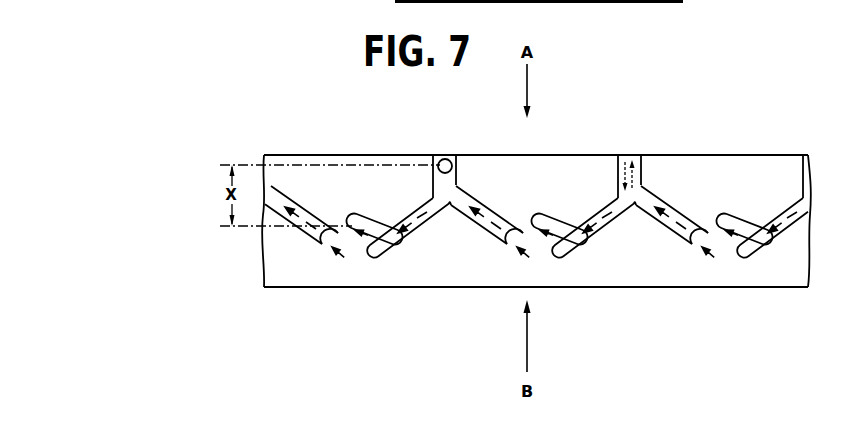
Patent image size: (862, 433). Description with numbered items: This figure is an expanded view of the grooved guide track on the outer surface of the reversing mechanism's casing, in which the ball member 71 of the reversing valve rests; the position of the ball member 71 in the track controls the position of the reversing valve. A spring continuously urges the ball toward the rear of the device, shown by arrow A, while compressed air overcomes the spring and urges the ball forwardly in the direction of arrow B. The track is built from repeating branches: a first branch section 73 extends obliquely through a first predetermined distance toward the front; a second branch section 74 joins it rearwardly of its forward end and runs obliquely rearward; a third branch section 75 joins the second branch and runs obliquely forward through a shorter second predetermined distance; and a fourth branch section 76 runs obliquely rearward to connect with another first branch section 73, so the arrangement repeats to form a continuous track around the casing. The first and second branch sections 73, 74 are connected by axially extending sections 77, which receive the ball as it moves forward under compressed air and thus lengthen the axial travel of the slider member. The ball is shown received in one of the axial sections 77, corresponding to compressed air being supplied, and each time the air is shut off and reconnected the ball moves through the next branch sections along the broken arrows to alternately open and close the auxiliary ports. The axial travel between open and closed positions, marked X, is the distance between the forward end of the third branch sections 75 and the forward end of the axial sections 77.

The ball member 71 is at (445, 159).
The first branch section 73 is at (304, 205).
The second branch section 74 is at (418, 230).
The third branch section 75 is at (362, 216).
The fourth branch section 76 is at (333, 253).
The axially extending section 77 is at (458, 176).